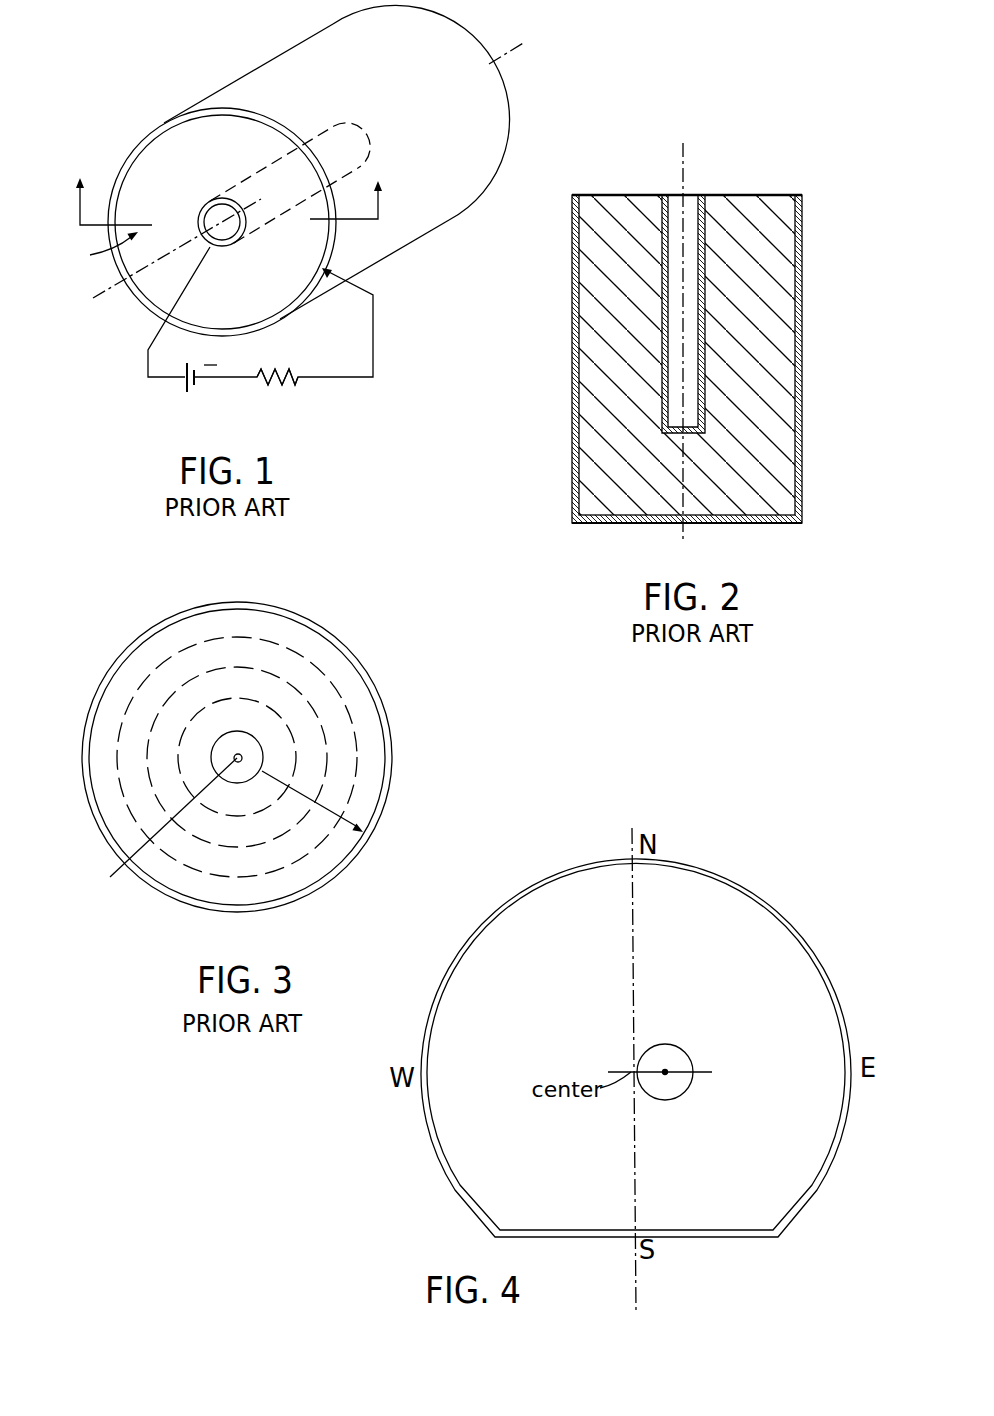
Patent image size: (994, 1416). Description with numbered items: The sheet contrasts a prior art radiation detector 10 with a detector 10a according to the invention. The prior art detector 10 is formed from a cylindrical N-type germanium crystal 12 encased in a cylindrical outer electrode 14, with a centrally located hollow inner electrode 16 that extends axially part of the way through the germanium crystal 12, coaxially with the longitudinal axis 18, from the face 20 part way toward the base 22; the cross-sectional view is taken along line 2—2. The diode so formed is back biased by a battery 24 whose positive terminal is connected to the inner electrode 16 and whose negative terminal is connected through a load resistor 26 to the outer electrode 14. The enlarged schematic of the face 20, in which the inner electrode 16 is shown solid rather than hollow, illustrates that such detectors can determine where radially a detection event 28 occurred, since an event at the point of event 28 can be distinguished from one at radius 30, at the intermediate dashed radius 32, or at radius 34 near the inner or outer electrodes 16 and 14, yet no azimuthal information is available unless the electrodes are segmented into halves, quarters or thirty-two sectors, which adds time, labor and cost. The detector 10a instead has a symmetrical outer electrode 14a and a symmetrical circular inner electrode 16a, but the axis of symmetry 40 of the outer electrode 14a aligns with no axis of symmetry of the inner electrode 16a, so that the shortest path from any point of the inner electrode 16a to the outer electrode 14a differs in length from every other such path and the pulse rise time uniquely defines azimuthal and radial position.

In FIG. 1, the radiation detector 10 is at (183, 30).
In FIG. 2, the radiation detector 10 is at (628, 148).
In FIG. 3, the radiation detector 10 is at (125, 615).
In FIG. 1, the germanium crystal 12 is at (98, 252).
In FIG. 2, the germanium crystal 12 is at (590, 303).
In FIG. 1, the outer electrode 14 is at (220, 97).
In FIG. 2, the outer electrode 14 is at (800, 300).
In FIG. 3, the outer electrode 14 is at (118, 663).
In FIG. 1, the inner electrode 16 is at (205, 199).
In FIG. 2, the inner electrode 16 is at (665, 196).
In FIG. 3, the inner electrode 16 is at (212, 757).
In FIG. 1, the longitudinal axis 18 is at (500, 58).
In FIG. 2, the longitudinal axis 18 is at (688, 172).
In FIG. 3, the longitudinal axis 18 is at (159, 831).
In FIG. 1, the face 20 is at (142, 203).
In FIG. 2, the face 20 is at (757, 195).
In FIG. 3, the face 20 is at (263, 620).
In FIG. 1, the base 22 is at (448, 21).
In FIG. 2, the base 22 is at (750, 523).
In FIG. 1, the battery 24 is at (193, 396).
In FIG. 1, the load resistor 26 is at (285, 388).
In FIG. 3, the detection event 28 is at (318, 800).
In FIG. 3, the radius 30 is at (330, 740).
In FIG. 3, the central zone 32 is at (293, 731).
In FIG. 3, the radius 34 is at (323, 672).
In FIG. 1, the line 2— 2 is at (229, 186).
In FIG. 4, the detector 10a is at (738, 853).
In FIG. 4, the outer electrode 14a is at (800, 930).
In FIG. 4, the inner electrode 16a is at (683, 1050).
In FIG. 4, the axis of symmetry 40 is at (638, 1295).